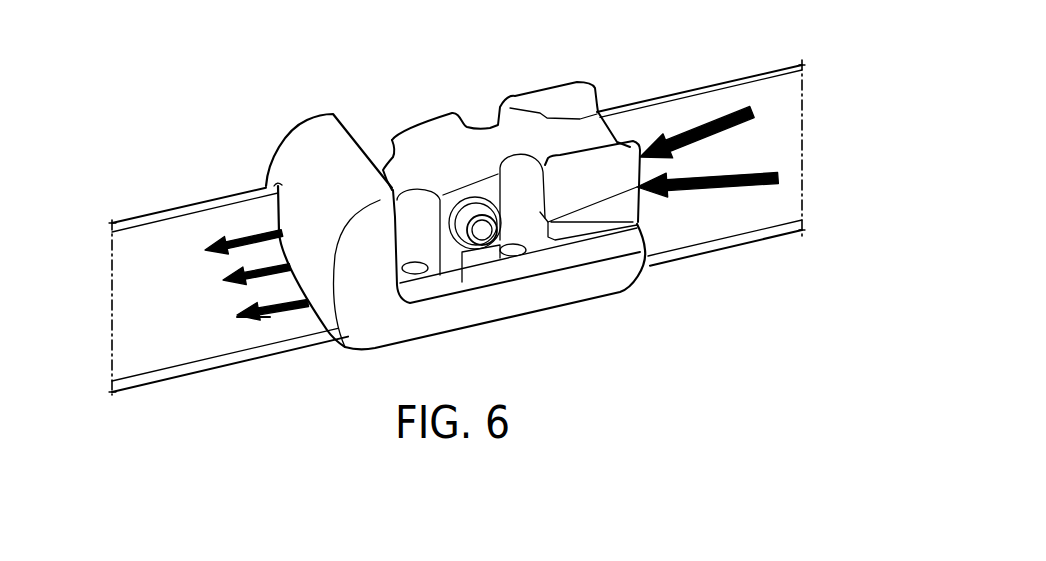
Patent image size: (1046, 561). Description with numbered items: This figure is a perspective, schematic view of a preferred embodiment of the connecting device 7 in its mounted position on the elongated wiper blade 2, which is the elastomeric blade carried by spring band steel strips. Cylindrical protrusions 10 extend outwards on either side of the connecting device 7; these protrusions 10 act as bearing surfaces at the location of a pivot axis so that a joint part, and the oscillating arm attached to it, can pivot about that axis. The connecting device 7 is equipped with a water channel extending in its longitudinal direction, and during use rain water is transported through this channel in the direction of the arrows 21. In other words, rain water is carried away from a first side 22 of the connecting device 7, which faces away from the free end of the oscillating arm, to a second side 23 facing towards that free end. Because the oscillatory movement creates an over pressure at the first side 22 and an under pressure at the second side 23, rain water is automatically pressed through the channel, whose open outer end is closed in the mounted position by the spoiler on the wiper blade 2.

The wiper blade 2 is at (190, 367).
The connecting device 7 is at (281, 90).
The cylindrical protrusion 10 is at (482, 232).
The arrows 21 is at (243, 308).
The first side 22 is at (678, 112).
The second side 23 is at (141, 236).